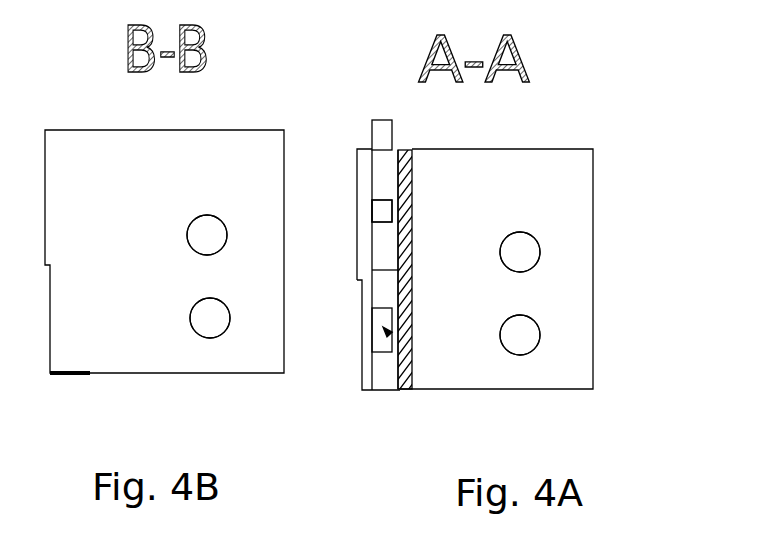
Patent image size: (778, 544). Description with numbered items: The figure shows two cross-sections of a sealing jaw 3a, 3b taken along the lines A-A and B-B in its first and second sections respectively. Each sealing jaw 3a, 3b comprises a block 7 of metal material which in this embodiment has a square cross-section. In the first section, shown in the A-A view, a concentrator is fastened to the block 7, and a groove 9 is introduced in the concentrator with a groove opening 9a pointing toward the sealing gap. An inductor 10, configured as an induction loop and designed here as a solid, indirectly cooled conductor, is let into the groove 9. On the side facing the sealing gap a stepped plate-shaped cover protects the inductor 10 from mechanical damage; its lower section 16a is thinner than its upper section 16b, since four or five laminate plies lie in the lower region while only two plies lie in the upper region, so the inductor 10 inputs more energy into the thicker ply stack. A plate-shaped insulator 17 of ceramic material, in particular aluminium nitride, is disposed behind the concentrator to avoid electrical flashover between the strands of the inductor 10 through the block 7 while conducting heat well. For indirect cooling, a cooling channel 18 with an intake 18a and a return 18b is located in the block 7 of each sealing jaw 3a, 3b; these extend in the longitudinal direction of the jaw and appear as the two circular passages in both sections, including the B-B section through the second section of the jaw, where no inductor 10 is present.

In FIG. 4A, the sealing jaw 3a is at (544, 210).
In FIG. 4A, the sealing jaw 3b is at (608, 118).
In FIG. 4A, the block 7 is at (568, 190).
In FIG. 4A, the groove 9 is at (398, 208).
In FIG. 4A, the groove opening 9a is at (372, 215).
In FIG. 4A, the inductor 10 is at (389, 333).
In FIG. 4A, the lower section of the cover 16a is at (358, 347).
In FIG. 4A, the upper section of the cover 16b is at (358, 182).
In FIG. 4A, the insulator 17 is at (400, 298).
In FIG. 4B, the cooling channel 18 is at (187, 236).
In FIG. 4A, the cooling channel 18 is at (531, 340).
In FIG. 4B, the intake 18a is at (212, 327).
In FIG. 4A, the intake 18a is at (515, 343).
In FIG. 4B, the return 18b is at (212, 232).
In FIG. 4A, the return 18b is at (515, 245).